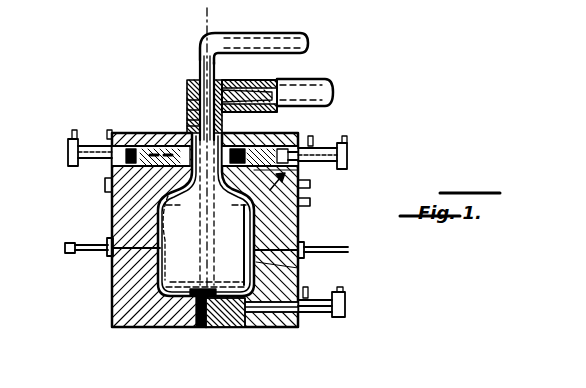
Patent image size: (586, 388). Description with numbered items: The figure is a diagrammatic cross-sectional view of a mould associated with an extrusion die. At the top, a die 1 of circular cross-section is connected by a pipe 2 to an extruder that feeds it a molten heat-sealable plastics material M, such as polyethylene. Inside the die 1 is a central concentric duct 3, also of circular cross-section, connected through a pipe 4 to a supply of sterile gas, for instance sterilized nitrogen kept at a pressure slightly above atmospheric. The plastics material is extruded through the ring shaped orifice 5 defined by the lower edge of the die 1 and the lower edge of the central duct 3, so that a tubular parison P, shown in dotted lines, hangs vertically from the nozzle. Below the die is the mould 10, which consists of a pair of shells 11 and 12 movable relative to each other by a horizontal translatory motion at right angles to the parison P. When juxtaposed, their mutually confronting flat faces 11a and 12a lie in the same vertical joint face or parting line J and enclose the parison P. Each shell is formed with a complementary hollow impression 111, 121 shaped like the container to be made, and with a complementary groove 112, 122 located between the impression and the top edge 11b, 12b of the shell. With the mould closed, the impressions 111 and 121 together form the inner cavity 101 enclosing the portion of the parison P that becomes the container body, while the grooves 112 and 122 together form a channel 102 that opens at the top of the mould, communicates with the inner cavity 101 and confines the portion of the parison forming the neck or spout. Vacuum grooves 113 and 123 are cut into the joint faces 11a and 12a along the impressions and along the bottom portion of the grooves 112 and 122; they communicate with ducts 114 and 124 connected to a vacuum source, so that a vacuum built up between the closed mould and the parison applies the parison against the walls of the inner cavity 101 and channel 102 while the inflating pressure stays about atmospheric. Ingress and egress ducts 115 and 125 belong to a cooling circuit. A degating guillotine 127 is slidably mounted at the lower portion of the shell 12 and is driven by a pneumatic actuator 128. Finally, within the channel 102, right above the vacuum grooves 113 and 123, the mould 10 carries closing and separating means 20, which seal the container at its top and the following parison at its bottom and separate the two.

The die 1 is at (187, 87).
The pipe 2 is at (310, 80).
The central duct 3 is at (197, 68).
The pipe 4 is at (248, 36).
The ring shaped orifice 5 is at (188, 110).
The mould 10 is at (58, 316).
The shell 11 is at (127, 310).
The flat face 11a is at (220, 325).
The top edge 11b is at (124, 133).
The shell 12 is at (272, 327).
The flat face 12a is at (202, 328).
The top edge 12b is at (298, 131).
The closing and separating means 20 is at (310, 206).
The inner cavity 101 is at (160, 210).
The channel 102 is at (255, 96).
The impression 111 is at (165, 236).
The groove 112 is at (186, 121).
The groove 113 is at (113, 290).
The duct 114 is at (75, 256).
The ingress and egress duct 115 is at (105, 189).
The impression 121 is at (298, 268).
The groove 122 is at (226, 126).
The groove 123 is at (256, 215).
The duct 124 is at (350, 251).
The ingress and egress duct 125 is at (310, 184).
The degating guillotine 127 is at (230, 316).
The pneumatic actuator 128 is at (327, 326).
The joint face J is at (198, 150).
The plastics material M is at (250, 80).
The parison P is at (150, 290).